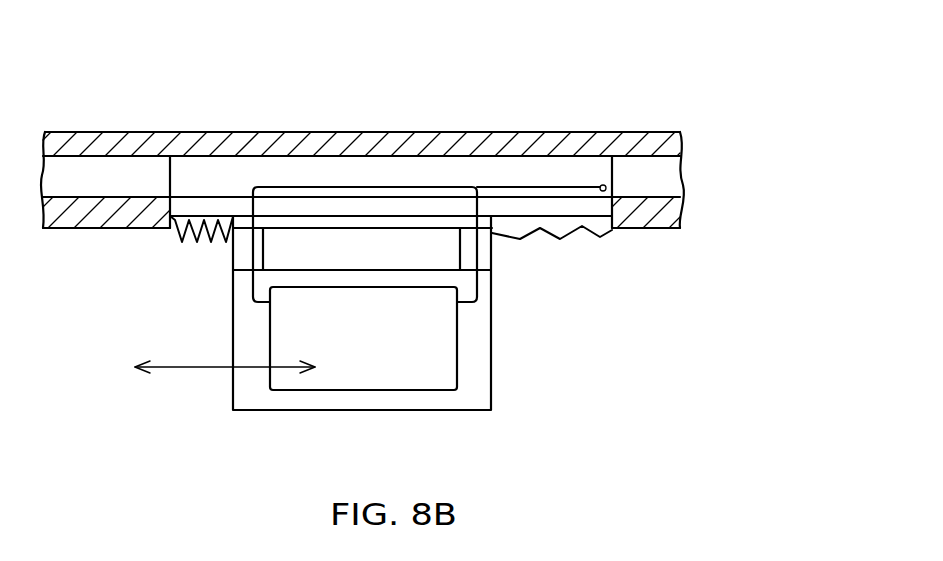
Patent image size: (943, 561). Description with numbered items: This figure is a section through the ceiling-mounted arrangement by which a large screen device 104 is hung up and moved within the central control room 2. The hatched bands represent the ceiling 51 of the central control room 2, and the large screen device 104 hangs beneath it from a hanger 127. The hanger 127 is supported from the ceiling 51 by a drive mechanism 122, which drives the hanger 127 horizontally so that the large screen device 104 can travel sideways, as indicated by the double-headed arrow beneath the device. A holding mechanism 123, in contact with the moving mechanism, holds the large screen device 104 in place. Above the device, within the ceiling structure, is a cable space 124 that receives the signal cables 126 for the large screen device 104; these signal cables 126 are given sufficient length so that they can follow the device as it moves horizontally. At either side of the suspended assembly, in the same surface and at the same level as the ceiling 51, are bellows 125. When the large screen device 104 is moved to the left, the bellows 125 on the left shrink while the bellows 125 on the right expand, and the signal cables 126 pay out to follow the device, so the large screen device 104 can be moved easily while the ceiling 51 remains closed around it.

The central control room 2 is at (680, 424).
The ceiling 51 is at (100, 229).
The large screen device 104 is at (492, 352).
The drive mechanism 122 is at (395, 218).
The holding mechanism 123 is at (528, 205).
The cable space 124 is at (488, 168).
The bellows 125 is at (208, 242).
The signal cables 126 is at (437, 185).
The hanger 127 is at (492, 262).